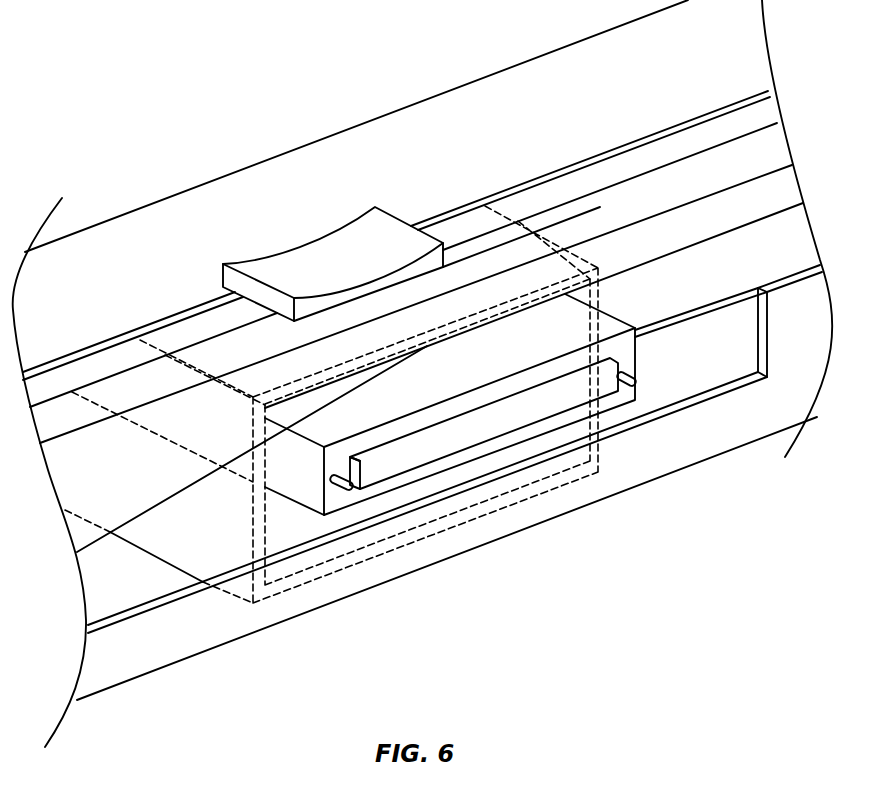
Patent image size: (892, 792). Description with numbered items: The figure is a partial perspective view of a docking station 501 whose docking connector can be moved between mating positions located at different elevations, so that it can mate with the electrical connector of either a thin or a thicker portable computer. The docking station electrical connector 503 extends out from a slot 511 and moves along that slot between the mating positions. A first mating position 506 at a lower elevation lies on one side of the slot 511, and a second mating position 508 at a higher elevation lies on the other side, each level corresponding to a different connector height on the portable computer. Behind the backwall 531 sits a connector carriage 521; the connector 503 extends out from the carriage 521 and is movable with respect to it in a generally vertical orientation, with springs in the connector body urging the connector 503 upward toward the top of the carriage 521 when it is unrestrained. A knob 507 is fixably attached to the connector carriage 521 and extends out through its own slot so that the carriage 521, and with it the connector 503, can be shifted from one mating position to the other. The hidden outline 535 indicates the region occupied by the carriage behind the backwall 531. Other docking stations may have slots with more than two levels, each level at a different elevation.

The docking station 501 is at (362, 113).
The docking station electrical connector 503 is at (627, 395).
The first mating position 506 is at (159, 556).
The knob 507 is at (315, 248).
The second mating position 508 is at (421, 304).
The slot 511 is at (743, 315).
The connector carriage 521 is at (210, 555).
The backwall 531 is at (130, 470).
The hidden cavity outline 535 is at (230, 462).